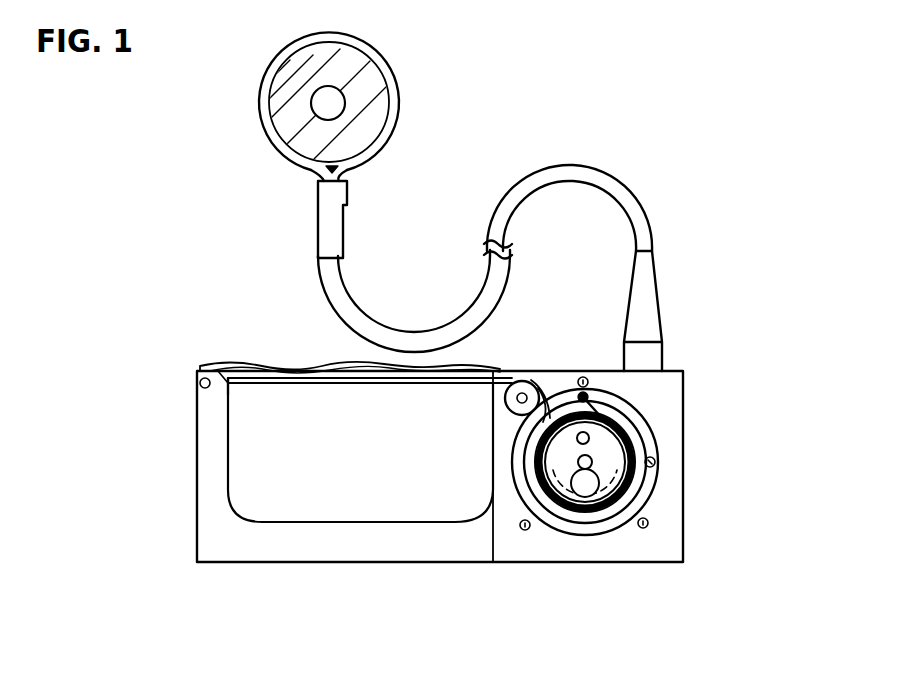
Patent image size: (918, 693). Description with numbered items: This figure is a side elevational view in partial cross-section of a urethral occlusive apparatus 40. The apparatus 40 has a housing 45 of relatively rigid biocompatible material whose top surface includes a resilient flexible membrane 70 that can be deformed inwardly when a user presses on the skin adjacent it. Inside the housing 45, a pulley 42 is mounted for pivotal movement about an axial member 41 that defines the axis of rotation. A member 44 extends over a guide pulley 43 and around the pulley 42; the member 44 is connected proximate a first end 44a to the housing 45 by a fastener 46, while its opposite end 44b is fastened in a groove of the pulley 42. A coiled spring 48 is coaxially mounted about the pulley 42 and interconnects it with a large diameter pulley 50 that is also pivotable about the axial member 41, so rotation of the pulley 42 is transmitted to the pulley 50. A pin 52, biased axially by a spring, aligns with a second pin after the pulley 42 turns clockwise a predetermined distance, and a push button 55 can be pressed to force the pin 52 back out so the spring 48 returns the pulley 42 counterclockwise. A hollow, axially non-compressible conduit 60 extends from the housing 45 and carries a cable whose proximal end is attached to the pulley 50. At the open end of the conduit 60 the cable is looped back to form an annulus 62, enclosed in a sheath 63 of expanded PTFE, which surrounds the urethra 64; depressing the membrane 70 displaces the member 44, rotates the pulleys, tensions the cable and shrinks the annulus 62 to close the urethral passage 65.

The urethral apparatus 40 is at (716, 218).
The axial member 41 is at (577, 462).
The pulley 42 is at (611, 456).
The guide pulley 43 is at (505, 398).
The member 44 is at (335, 382).
The first end 44a is at (230, 385).
The opposite end 44b is at (632, 450).
The housing 45 is at (277, 552).
The fastener 46 is at (199, 384).
The coiled spring 48 is at (608, 452).
The large diameter pulley 50 is at (650, 487).
The pin 52 is at (579, 432).
The push button 55 is at (582, 494).
The conduit 60 is at (600, 171).
The annulus 62 is at (392, 66).
The sheath 63 is at (395, 78).
The urethra 64 is at (356, 60).
The urethral passage 65 is at (338, 101).
The flexible membrane 70 is at (283, 366).